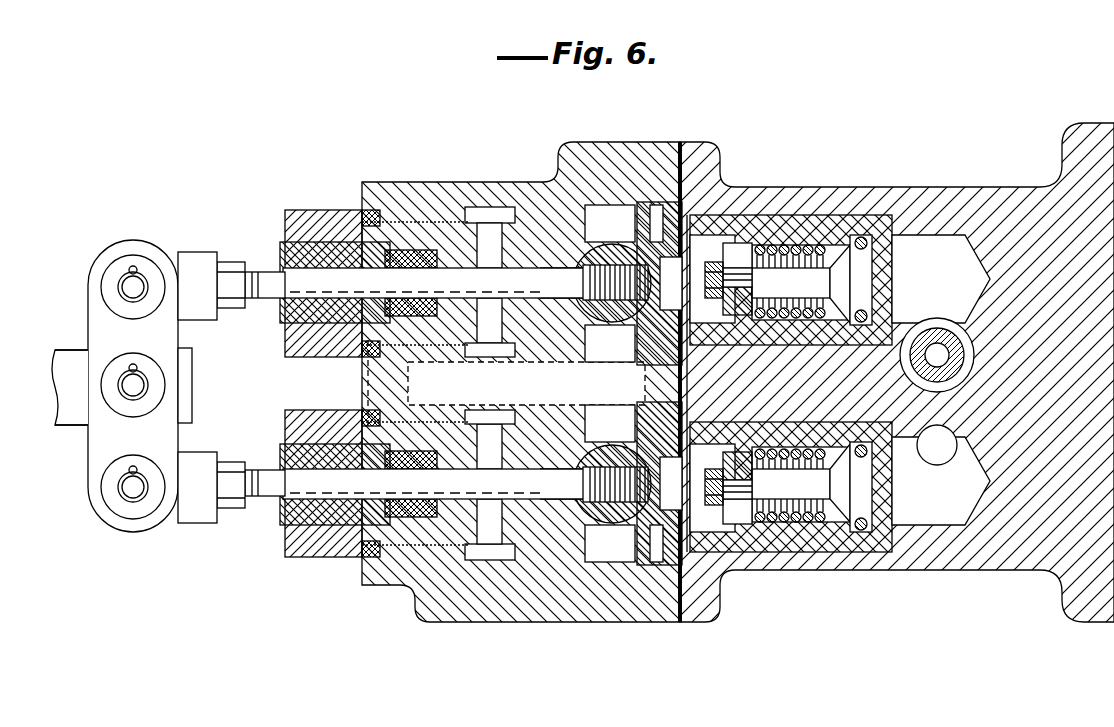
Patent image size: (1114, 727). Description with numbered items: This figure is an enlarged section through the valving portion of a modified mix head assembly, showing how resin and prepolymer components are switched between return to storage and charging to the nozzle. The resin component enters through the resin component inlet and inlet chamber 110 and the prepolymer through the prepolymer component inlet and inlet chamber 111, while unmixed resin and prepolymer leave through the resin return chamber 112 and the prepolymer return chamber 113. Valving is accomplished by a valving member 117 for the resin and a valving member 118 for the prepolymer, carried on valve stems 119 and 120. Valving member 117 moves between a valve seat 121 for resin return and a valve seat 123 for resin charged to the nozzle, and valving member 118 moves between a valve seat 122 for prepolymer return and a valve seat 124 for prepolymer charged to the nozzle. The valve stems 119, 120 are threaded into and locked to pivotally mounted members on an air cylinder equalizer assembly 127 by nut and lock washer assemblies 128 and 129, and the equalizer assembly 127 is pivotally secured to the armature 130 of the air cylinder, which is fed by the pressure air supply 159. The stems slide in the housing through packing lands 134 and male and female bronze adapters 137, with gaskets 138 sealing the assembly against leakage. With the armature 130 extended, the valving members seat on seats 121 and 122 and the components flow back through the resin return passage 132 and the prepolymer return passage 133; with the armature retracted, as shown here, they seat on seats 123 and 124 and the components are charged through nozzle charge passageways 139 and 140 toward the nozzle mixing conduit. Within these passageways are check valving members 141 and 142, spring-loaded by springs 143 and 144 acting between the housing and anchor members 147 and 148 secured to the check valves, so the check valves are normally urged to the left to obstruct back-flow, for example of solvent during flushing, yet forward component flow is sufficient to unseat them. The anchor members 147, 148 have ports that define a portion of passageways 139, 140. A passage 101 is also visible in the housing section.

The passage 101 is at (973, 360).
The resin component inlet and inlet chamber 110 is at (603, 562).
The prepolymer component inlet and inlet chamber 111 is at (600, 206).
The resin component outlet or return chamber 112 is at (486, 566).
The prepolymer component outlet or return chamber 113 is at (479, 210).
The valving member 117 is at (632, 504).
The valving member 118 is at (610, 223).
The valve stem 119 is at (286, 494).
The valve stem 120 is at (272, 276).
The valve seat 121 is at (656, 458).
The valve seat 122 is at (669, 306).
The valve seat 123 is at (598, 448).
The valve seat 124 is at (612, 322).
The air cylinder equalizer assembly 127 is at (96, 456).
The nut and lock washer assembly 128 is at (230, 524).
The nut and lock washer assembly 129 is at (232, 256).
The armature 130 is at (76, 352).
The resin return passage 132 is at (548, 470).
The prepolymer return passage 133 is at (549, 268).
The packing land 134 is at (286, 316).
The male and female bronze adapters 137 is at (412, 276).
The gasket 138 is at (366, 358).
The nozzle charge passageway 139 is at (742, 470).
The nozzle charge passageway 140 is at (742, 268).
The check valving member 141 is at (852, 491).
The check valving member 142 is at (812, 280).
The spring 143 is at (818, 514).
The spring 144 is at (793, 250).
The anchor member 147 is at (752, 514).
The anchor member 148 is at (748, 310).
The pressure air supply 159 is at (946, 462).